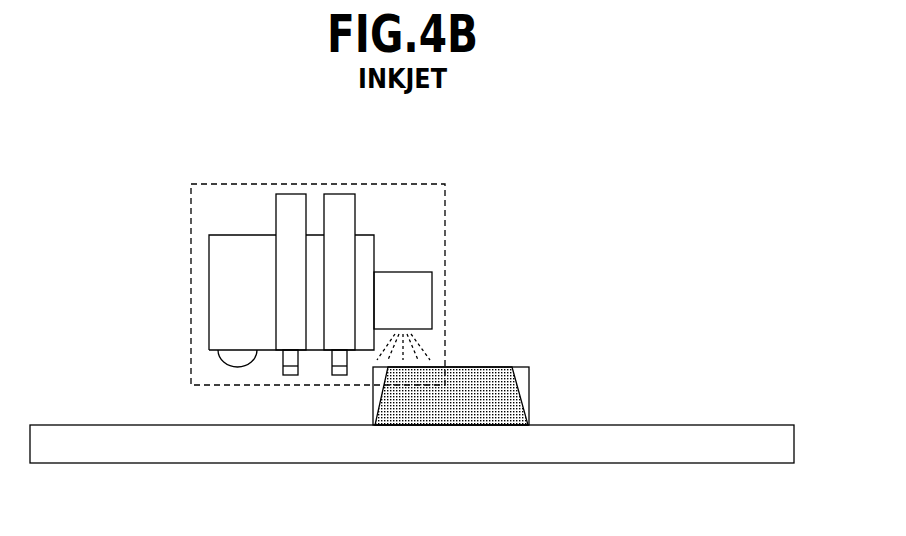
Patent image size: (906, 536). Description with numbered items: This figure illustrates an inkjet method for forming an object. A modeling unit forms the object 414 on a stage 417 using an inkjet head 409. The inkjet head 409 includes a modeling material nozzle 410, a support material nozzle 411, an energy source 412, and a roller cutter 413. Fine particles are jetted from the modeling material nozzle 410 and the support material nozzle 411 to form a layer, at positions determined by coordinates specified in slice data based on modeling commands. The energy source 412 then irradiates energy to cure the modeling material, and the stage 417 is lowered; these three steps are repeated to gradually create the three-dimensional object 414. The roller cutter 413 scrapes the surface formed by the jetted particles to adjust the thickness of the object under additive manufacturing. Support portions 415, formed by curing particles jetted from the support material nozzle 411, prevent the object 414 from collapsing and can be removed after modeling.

The inkjet head 409 is at (419, 183).
The modeling material nozzle 410 is at (290, 205).
The support material nozzle 411 is at (344, 203).
The energy source 412 is at (425, 295).
The roller cutter 413 is at (238, 364).
The object 414 is at (480, 376).
The support portions 415 is at (523, 377).
The stage 417 is at (150, 455).